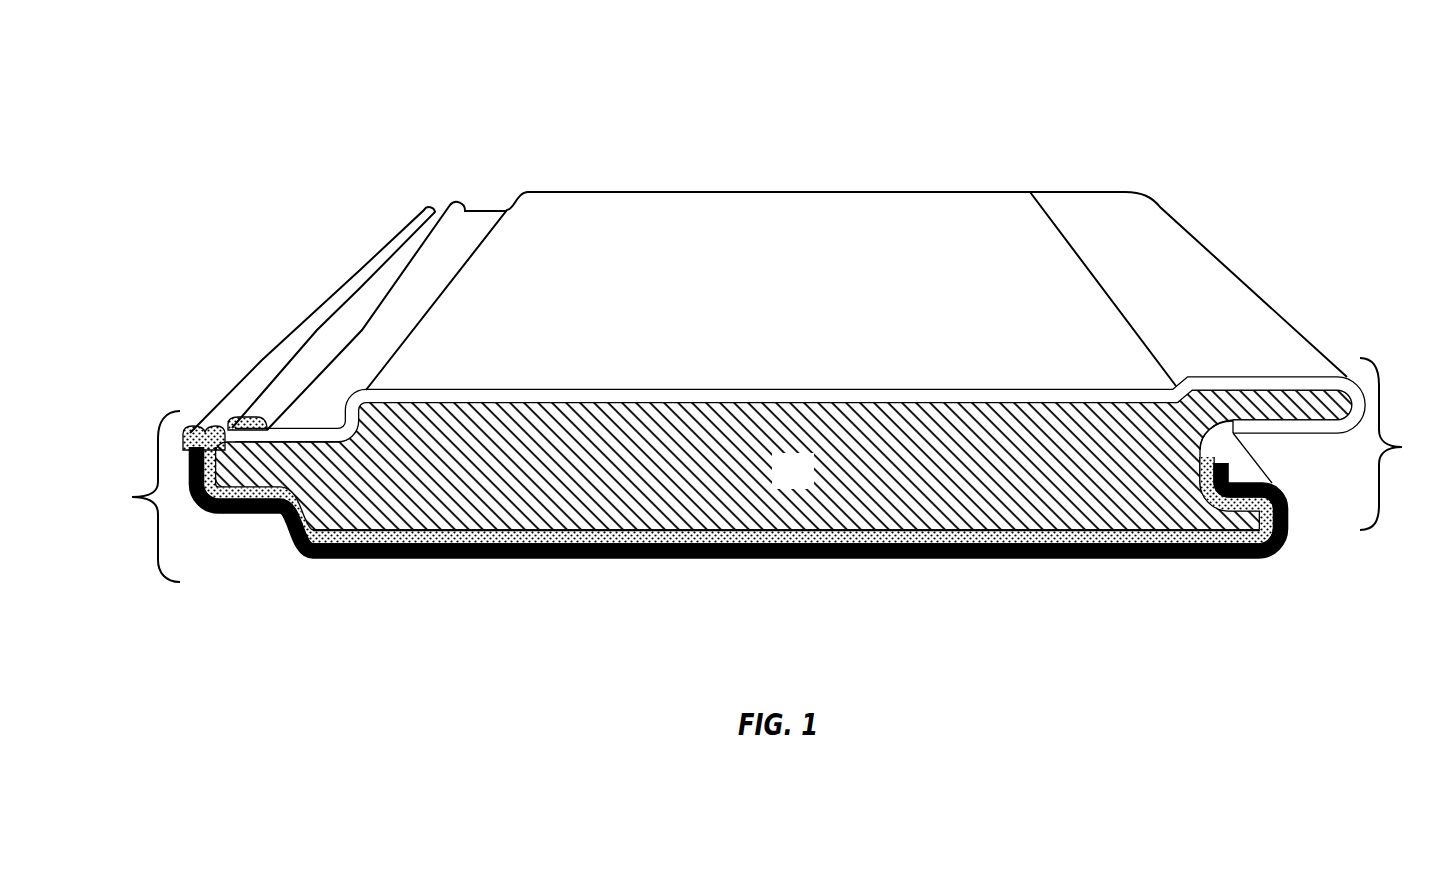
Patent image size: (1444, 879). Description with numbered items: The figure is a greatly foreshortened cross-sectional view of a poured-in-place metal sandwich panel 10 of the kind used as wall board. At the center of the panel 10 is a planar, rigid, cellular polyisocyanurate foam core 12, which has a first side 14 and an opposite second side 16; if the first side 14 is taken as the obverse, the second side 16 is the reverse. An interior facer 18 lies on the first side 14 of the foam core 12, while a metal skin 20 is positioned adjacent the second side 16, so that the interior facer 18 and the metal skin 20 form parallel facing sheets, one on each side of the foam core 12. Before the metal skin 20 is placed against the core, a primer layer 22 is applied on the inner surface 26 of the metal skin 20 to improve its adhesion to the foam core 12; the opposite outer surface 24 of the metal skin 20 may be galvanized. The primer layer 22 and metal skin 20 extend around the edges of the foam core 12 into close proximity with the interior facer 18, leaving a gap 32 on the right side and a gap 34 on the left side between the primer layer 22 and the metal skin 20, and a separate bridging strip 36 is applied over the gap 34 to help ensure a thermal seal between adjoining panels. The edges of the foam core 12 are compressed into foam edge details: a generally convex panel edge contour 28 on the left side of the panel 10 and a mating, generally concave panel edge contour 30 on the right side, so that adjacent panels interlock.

The poured-in-place sandwich panel 10 is at (360, 110).
The foam core 12 is at (808, 484).
The first side 14 is at (997, 403).
The second side 16 is at (790, 528).
The interior facer 18 is at (808, 317).
The metal skin 20 is at (370, 557).
The primer layer 22 is at (908, 540).
The outer surface 24 is at (1068, 557).
The inner surface 26 is at (636, 542).
The generally convex panel edge contour 28 is at (139, 496).
The generally concave panel edge contour 30 is at (1400, 444).
The gap 32 is at (1247, 463).
The gap 34 is at (208, 428).
The bridging strip 36 is at (398, 238).